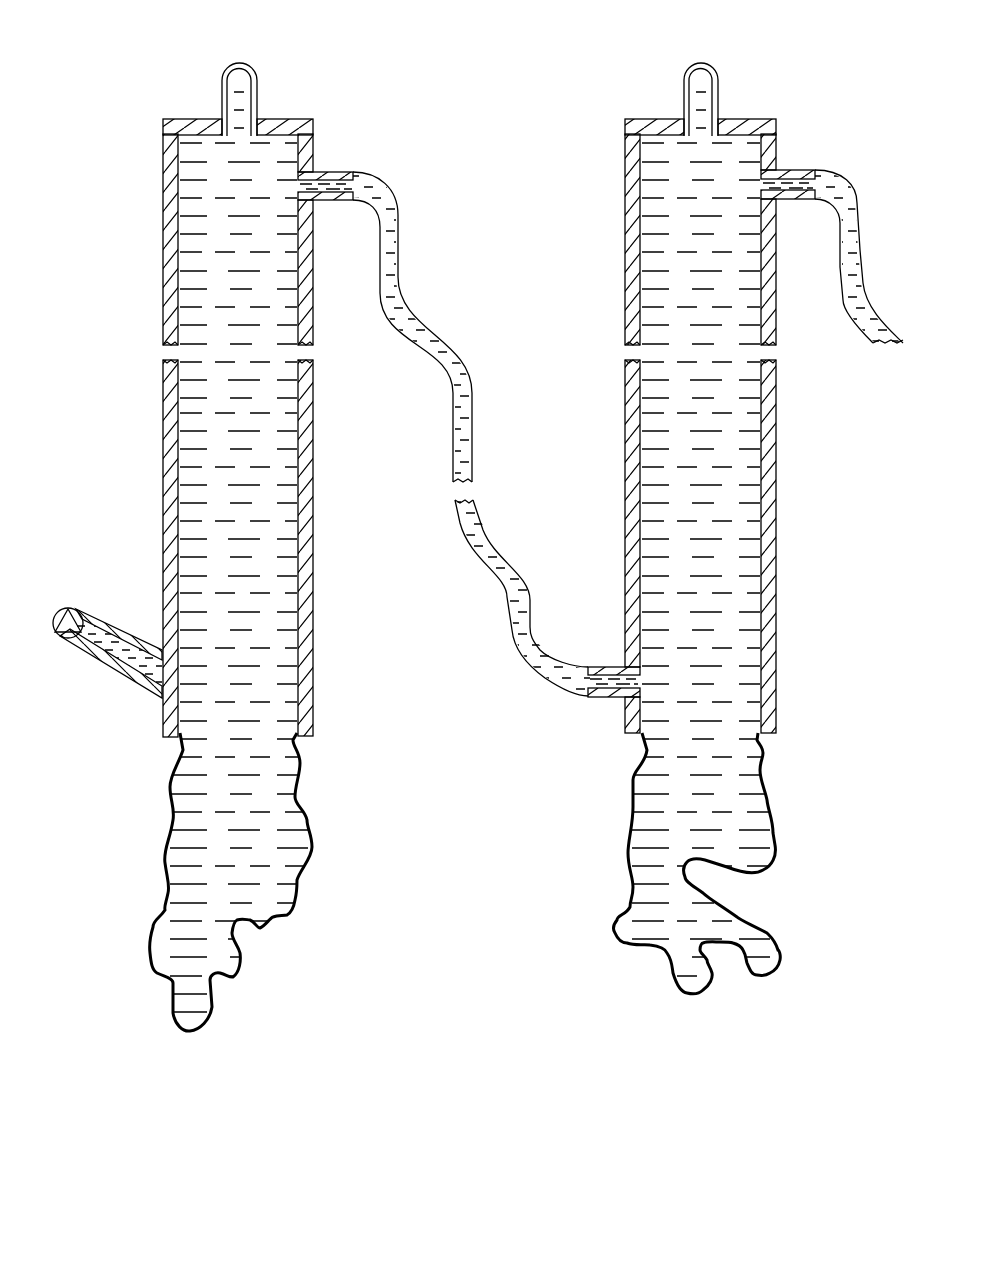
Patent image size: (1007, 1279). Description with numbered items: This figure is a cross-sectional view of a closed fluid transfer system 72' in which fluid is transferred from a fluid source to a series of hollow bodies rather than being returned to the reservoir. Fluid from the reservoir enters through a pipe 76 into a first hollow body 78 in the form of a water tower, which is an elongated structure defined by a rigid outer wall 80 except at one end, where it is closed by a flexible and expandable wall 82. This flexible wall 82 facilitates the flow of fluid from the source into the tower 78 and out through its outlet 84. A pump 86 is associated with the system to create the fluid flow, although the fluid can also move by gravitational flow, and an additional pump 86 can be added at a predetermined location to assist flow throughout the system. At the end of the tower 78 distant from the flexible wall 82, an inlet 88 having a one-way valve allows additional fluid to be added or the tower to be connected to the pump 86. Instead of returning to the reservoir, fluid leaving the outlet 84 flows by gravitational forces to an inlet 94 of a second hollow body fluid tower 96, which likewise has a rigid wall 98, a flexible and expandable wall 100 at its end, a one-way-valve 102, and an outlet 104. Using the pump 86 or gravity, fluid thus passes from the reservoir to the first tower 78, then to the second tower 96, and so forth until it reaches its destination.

The closed fluid transfer system 72' is at (459, 559).
The pipe 76 is at (130, 640).
The hollow body 78 is at (125, 317).
The rigid outer wall 80 is at (313, 562).
The flexible and expandable wall 82 is at (297, 895).
The outlet 84 is at (327, 171).
The pump 86 is at (55, 612).
The inlet 88 is at (245, 65).
The inlet 94 is at (607, 682).
The hollow body fluid tower 96 is at (781, 595).
The rigid wall 98 is at (777, 502).
The flexible and expandable wall 100 is at (777, 838).
The one-way-valve 102 is at (713, 65).
The outlet 104 is at (750, 117).